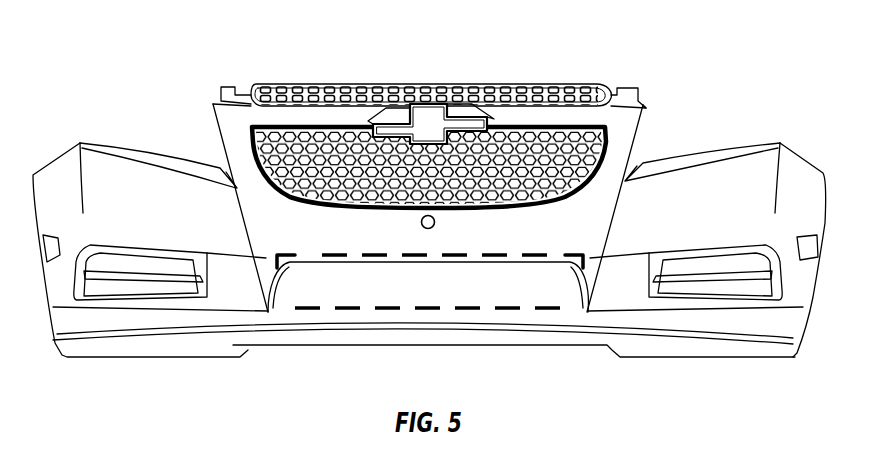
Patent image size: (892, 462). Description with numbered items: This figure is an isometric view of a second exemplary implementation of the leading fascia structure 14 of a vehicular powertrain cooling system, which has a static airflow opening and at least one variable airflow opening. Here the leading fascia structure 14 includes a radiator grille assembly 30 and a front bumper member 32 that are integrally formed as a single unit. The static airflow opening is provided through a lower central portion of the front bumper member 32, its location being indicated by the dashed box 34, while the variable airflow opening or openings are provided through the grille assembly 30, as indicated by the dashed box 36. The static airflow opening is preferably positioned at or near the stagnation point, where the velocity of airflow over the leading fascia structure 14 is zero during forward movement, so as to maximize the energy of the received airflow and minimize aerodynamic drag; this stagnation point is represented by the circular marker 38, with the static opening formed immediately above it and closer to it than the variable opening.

The leading fascia structure 14 is at (134, 48).
The radiator grille assembly 30 is at (580, 88).
The front bumper member 32 is at (697, 161).
The dashed box 34 is at (465, 104).
The dashed box 36 is at (507, 311).
The circular marker 38 is at (435, 224).